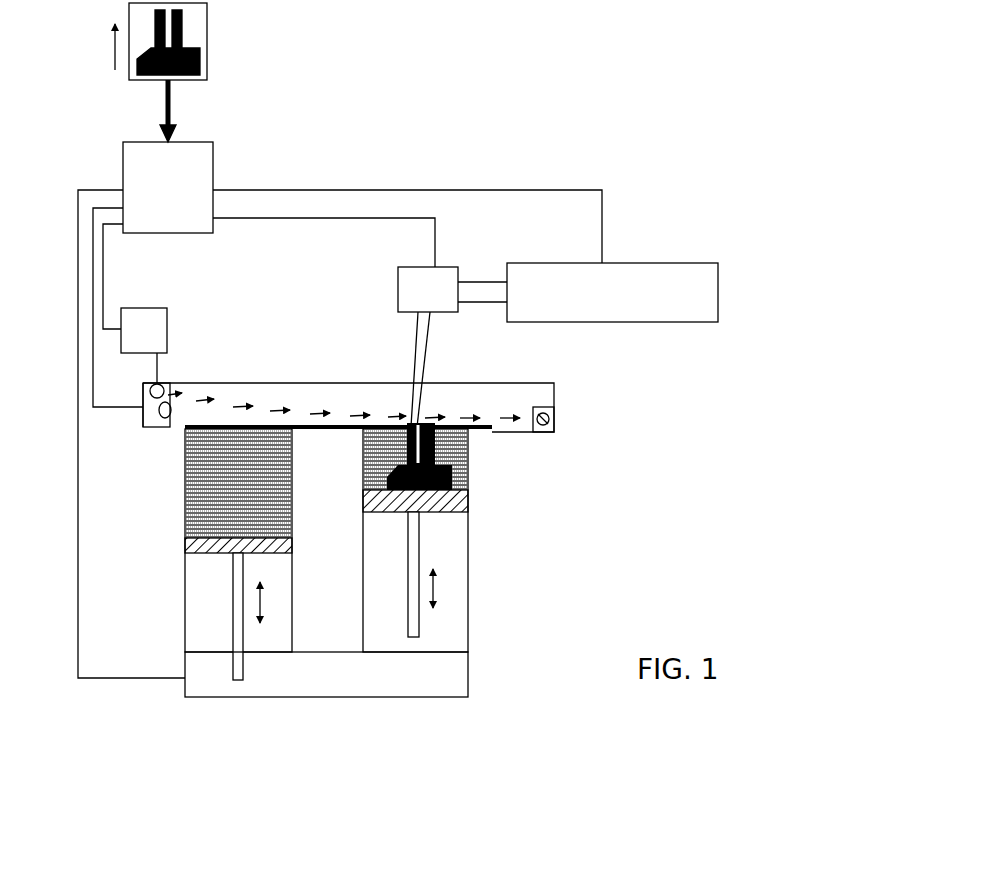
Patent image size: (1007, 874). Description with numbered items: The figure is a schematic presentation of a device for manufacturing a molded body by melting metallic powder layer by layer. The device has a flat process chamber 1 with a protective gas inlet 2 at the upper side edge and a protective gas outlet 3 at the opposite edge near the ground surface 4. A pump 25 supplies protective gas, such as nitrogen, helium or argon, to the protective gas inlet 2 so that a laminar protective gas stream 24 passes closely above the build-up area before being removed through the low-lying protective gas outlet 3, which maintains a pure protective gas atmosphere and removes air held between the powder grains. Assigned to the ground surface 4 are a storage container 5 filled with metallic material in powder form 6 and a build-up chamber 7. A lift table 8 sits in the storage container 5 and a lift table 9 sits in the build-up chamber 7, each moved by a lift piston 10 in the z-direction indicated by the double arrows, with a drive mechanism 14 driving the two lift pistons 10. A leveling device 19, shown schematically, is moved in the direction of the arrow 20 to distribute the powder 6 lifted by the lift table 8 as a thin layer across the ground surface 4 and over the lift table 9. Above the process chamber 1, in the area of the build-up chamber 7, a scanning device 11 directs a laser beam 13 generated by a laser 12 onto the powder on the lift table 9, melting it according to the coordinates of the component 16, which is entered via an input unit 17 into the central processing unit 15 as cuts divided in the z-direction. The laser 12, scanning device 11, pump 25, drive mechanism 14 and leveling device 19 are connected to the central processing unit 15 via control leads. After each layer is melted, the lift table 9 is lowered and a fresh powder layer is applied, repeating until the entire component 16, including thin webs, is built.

The process chamber 1 is at (517, 396).
The protective gas inlet 2 is at (168, 391).
The protective gas outlet 3 is at (556, 417).
The ground surface 4 is at (522, 433).
The storage container 5 is at (185, 508).
The metallic material in powder form 6 is at (190, 473).
The build-up chamber 7 is at (470, 458).
The lift table 8 is at (190, 552).
The lift table 9 is at (470, 512).
The lift piston 10 is at (237, 633).
The scanning device 11 is at (415, 290).
The laser 12 is at (683, 280).
The laser beam 13 is at (469, 290).
The drive mechanism 14 is at (283, 683).
The central processing unit 15 is at (200, 172).
The component 16 is at (470, 487).
The input unit 17 is at (207, 53).
The leveling device 19 is at (83, 416).
The arrow 20 is at (180, 410).
The laminar protective gas stream 24 is at (315, 415).
The pump 25 is at (158, 327).